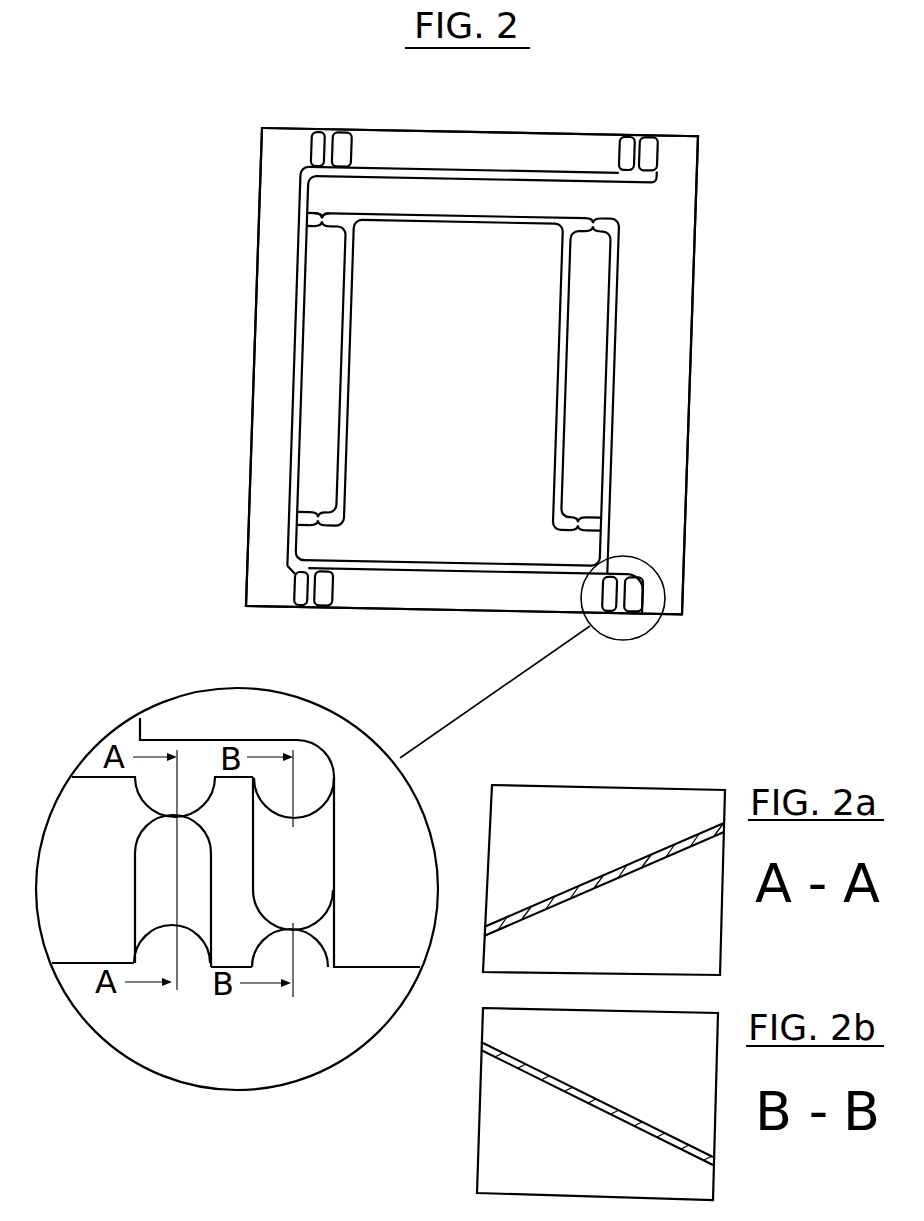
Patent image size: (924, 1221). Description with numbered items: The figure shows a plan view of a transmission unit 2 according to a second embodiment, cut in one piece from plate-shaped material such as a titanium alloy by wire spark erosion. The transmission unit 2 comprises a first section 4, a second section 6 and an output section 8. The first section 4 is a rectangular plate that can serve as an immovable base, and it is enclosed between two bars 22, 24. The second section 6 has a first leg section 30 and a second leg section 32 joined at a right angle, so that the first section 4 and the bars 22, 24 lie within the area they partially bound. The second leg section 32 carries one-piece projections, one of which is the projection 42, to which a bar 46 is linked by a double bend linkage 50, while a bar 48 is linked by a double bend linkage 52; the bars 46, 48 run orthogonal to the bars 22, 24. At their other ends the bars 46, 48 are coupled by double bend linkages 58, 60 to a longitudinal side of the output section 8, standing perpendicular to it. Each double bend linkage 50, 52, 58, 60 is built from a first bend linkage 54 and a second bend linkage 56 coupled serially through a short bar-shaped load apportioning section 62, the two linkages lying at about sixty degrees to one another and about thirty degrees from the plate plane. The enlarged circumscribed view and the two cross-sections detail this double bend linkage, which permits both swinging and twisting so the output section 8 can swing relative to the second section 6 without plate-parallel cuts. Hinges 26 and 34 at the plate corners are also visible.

In FIG. 2, the transmission unit 2 is at (194, 329).
In FIG. 2, the first section 4 is at (454, 375).
In FIG. 2, the second section 6 is at (693, 298).
In FIG. 2, the output section 8 is at (286, 370).
In FIG. 2, the bar 22 is at (321, 369).
In FIG. 2, the bar 24 is at (586, 378).
In FIG. 2, the lower flexure hinge of left plate 26 is at (312, 518).
In FIG. 2, the first leg section 30 is at (482, 195).
In FIG. 2, the second leg section 32 is at (482, 379).
In FIG. 2c, the second leg section 32 is at (237, 738).
In FIG. 2, the upper flexure hinge of left plate 34 is at (318, 219).
In FIG. 2c, the projection 42 is at (377, 872).
In FIG. 2, the bar 46 is at (475, 590).
In FIG. 2c, the bar 46 is at (150, 870).
In FIG. 2, the bar 48 is at (464, 155).
In FIG. 2, the double bend linkage 50 is at (621, 641).
In FIG. 2, the double bend linkage 52 is at (637, 125).
In FIG. 2c, the first bend linkage 54 is at (293, 872).
In FIG. 2b, the first bend linkage 54 is at (608, 1100).
In FIG. 2c, the second bend linkage 56 is at (172, 891).
In FIG. 2a, the second bend linkage 56 is at (595, 882).
In FIG. 2, the double bend linkage 58 is at (300, 618).
In FIG. 2, the double bend linkage 60 is at (334, 120).
In FIG. 2c, the load apportioning section 62 is at (231, 872).